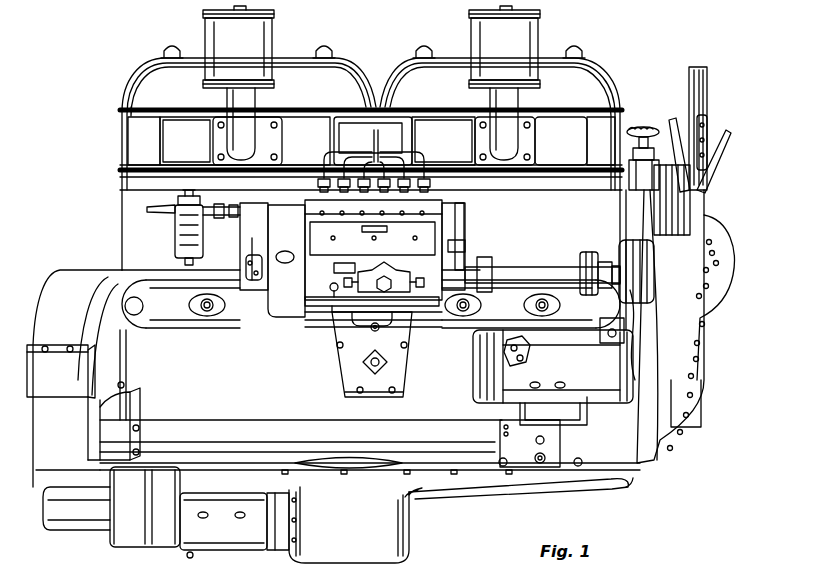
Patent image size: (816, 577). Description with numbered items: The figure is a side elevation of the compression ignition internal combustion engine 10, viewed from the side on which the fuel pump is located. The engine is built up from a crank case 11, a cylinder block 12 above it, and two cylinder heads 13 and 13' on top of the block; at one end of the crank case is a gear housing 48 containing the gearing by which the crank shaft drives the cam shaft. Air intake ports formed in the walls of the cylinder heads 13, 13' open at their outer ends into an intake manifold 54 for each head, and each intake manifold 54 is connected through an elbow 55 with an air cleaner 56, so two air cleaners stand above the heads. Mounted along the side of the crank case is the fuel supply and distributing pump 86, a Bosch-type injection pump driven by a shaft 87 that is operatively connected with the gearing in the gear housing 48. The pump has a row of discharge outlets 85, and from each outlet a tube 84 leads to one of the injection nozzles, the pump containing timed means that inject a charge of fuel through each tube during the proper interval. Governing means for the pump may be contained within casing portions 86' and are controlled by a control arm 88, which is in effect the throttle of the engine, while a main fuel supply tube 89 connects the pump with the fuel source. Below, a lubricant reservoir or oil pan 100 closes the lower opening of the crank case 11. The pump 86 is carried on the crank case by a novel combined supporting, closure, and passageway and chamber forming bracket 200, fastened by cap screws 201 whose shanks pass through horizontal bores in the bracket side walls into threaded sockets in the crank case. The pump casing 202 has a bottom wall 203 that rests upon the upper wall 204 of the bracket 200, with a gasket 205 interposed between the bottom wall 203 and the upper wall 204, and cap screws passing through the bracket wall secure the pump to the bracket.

The compression ignition internal combustion engine 10 is at (629, 478).
The crank case 11 is at (333, 374).
The cylinder block 12 is at (128, 207).
The cylinder head 13 is at (638, 137).
The cylinder head 13' is at (113, 141).
The gear housing 48 is at (687, 332).
The intake manifold 54 is at (296, 132).
The elbow 55 is at (236, 141).
The air cleaner 56 is at (222, 32).
The tube 84 is at (394, 154).
The discharge outlet 85 is at (436, 192).
The fuel supply and distributing pump 86 is at (371, 258).
The casing portion 86' is at (198, 227).
The shaft 87 is at (527, 278).
The control arm 88 is at (248, 248).
The main fuel supply tube 89 is at (464, 205).
The oil pan 100 is at (452, 484).
The bracket 200 is at (402, 360).
The cap screws 201 is at (359, 392).
The casing 202 is at (372, 239).
The bottom wall 203 is at (312, 298).
The upper wall 204 is at (332, 309).
The gasket 205 is at (316, 301).